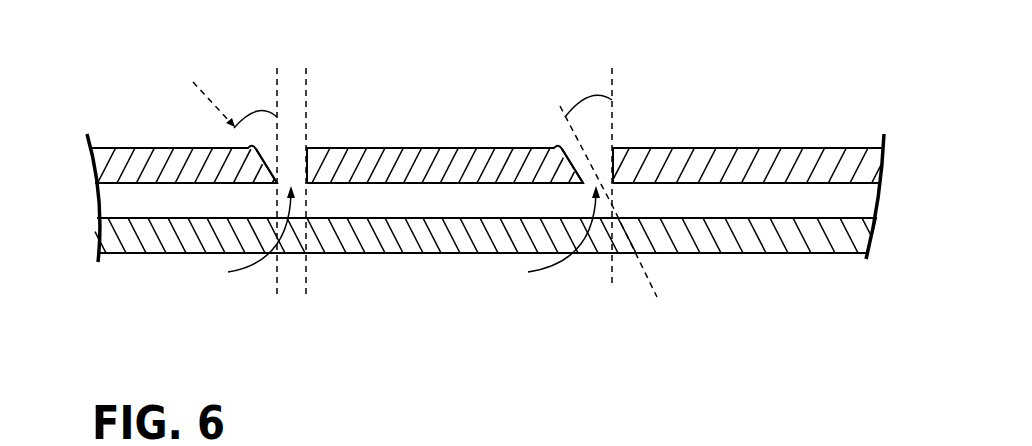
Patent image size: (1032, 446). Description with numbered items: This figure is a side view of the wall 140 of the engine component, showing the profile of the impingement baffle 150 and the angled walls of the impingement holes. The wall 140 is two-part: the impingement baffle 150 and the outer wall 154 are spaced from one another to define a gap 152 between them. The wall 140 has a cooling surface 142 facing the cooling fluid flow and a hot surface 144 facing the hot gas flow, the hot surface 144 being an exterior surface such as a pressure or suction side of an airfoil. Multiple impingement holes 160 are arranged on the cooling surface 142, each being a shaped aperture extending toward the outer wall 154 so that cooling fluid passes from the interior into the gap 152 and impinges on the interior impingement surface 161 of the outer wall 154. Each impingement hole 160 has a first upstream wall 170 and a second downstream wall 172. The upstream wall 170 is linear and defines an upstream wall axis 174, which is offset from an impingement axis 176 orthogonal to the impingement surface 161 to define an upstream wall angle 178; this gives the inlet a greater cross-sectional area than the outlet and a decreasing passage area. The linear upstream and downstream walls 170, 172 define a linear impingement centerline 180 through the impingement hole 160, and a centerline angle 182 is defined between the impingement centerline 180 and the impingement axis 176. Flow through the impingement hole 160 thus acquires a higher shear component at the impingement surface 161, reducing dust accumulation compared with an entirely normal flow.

The wall 140 is at (83, 147).
The cooling surface 142 is at (772, 148).
The hot surface 144 is at (786, 254).
The impingement baffle 150 is at (887, 149).
The gap 152 is at (884, 184).
The outer wall 154 is at (881, 219).
The impingement hole 160 is at (391, 236).
The impingement surface 161 is at (746, 222).
The upstream wall 170 is at (250, 146).
The downstream wall 172 is at (307, 160).
The upstream wall axis 174 is at (213, 99).
The impingement axis 176 is at (271, 80).
The upstream wall angle 178 is at (252, 110).
The impingement centerline 180 is at (560, 110).
The centerline angle 182 is at (590, 98).